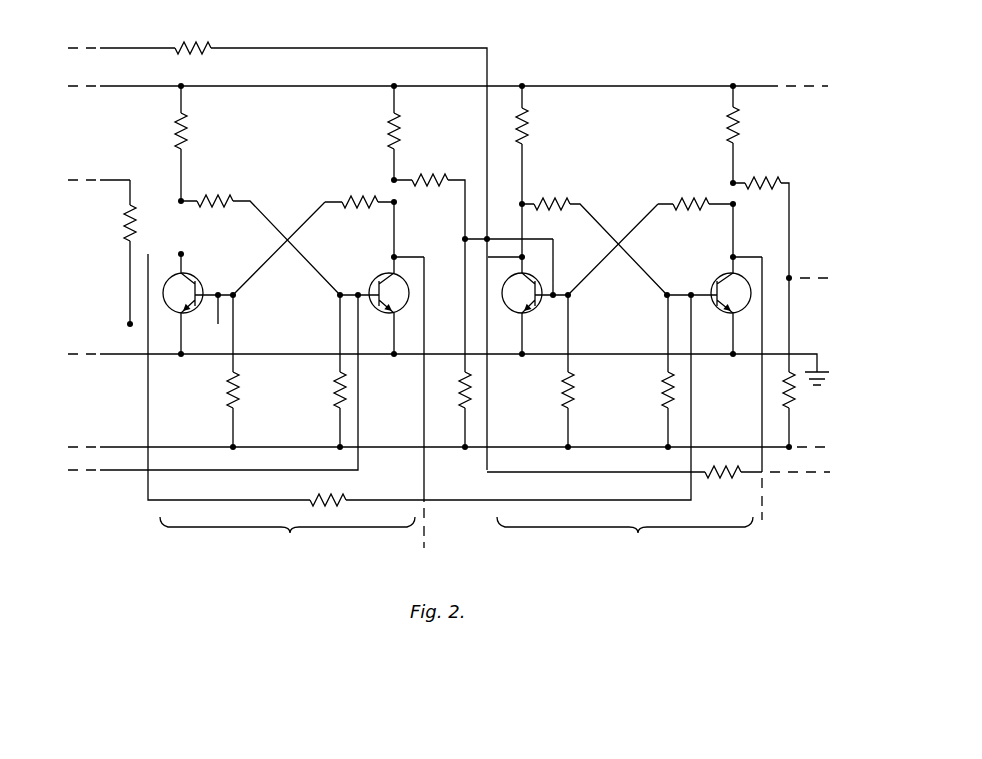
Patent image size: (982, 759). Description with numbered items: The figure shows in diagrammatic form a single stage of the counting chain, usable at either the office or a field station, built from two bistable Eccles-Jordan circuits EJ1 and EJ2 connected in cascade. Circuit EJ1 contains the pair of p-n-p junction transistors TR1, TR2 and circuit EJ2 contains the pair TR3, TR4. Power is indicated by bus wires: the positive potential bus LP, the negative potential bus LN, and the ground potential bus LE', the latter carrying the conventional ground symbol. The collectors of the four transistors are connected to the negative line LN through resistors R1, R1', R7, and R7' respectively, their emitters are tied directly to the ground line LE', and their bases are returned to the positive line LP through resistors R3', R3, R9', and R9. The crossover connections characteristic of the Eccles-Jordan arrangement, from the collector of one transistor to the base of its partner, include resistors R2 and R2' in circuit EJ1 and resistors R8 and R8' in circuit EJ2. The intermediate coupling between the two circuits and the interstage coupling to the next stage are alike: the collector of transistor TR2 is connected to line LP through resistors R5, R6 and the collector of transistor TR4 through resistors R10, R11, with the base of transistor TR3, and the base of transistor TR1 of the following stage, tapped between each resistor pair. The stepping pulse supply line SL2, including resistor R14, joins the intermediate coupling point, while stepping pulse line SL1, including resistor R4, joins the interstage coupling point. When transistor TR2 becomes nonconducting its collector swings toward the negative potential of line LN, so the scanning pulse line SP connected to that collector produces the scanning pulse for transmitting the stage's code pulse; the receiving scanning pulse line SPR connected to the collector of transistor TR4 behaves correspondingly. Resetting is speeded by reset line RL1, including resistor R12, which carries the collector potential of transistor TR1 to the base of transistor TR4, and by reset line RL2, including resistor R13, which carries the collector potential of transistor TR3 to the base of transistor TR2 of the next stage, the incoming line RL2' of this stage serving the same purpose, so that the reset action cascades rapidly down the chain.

The collector resistor R1 is at (156, 143).
The collector resistor R1' is at (364, 133).
The crossover resistor R2 is at (259, 234).
The crossover resistor R2' is at (315, 234).
The base resistor R3 is at (314, 372).
The base resistor R3' is at (207, 372).
The stepping pulse line resistor R4 is at (124, 230).
The coupling resistor R5 is at (440, 172).
The coupling resistor R6 is at (462, 396).
The collector resistor R7 is at (544, 145).
The collector resistor R7' is at (753, 134).
The crossover resistor R8 is at (593, 234).
The crossover resistor R8' is at (652, 234).
The base resistor R9 is at (644, 372).
The base resistor R9' is at (544, 372).
The coupling resistor R10 is at (772, 182).
The coupling resistor R11 is at (793, 396).
The reset line resistor R12 is at (312, 498).
The reset line resistor R13 is at (720, 488).
The stepping pulse line resistor R14 is at (208, 32).
The transistor TR1 is at (228, 263).
The transistor TR2 is at (380, 280).
The transistor TR3 is at (533, 313).
The transistor TR4 is at (719, 281).
The stepping pulse supply line SL1 is at (120, 180).
The stepping pulse supply line SL2 is at (368, 48).
The negative potential bus LN is at (757, 83).
The ground potential bus LE' is at (448, 369).
The positive potential bus LP is at (737, 442).
The resetting line RL1 is at (536, 500).
The resetting line RL2 is at (658, 461).
The resetting line RL2' is at (213, 402).
The scanning pulse line SP is at (425, 472).
The receiving scanning pulse line SPR is at (765, 478).
The Eccles-Jordan circuit EJ1 is at (287, 539).
The Eccles-Jordan circuit EJ2 is at (625, 539).